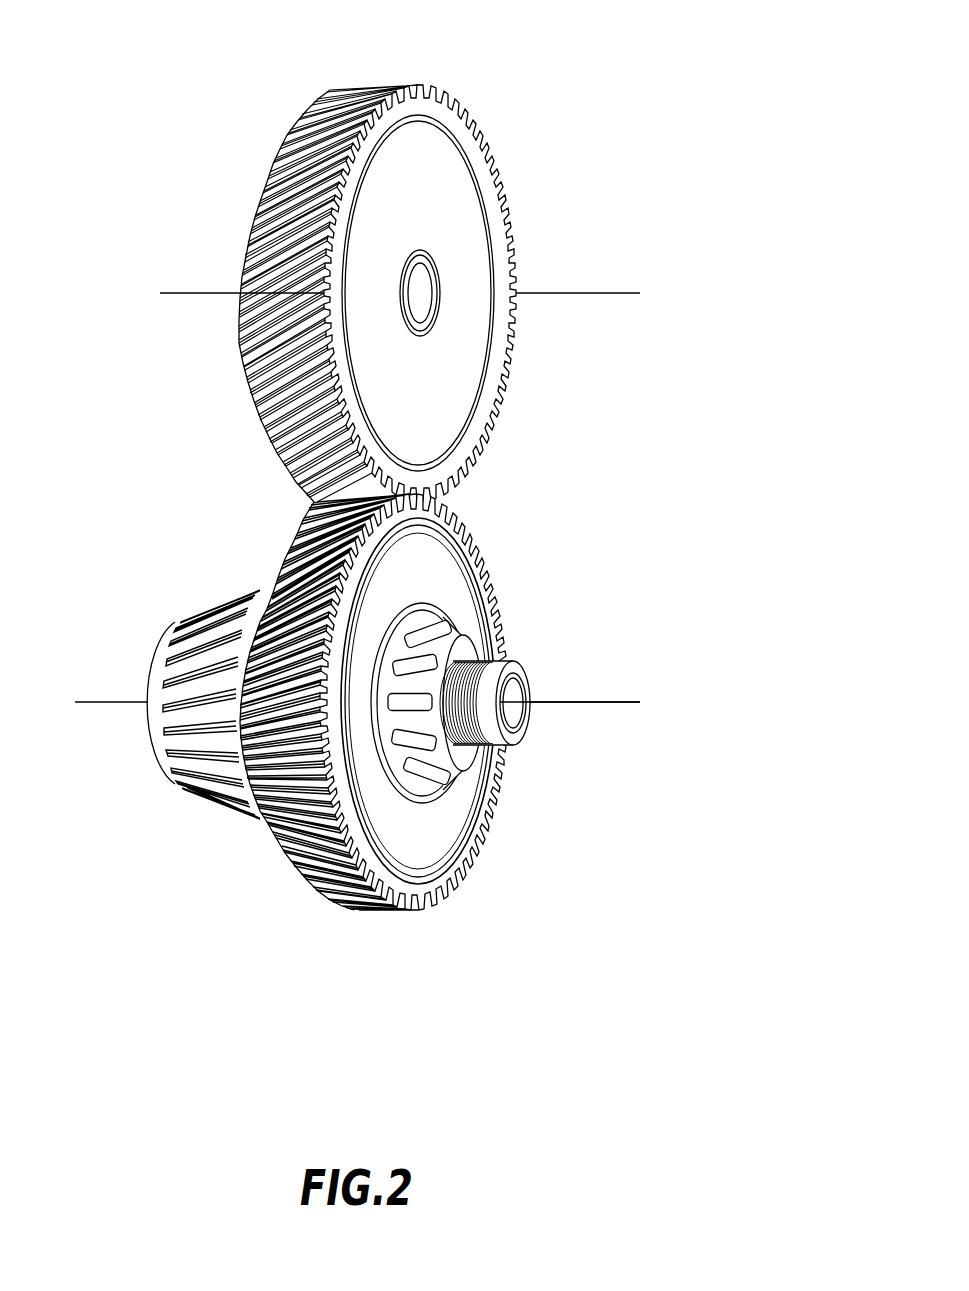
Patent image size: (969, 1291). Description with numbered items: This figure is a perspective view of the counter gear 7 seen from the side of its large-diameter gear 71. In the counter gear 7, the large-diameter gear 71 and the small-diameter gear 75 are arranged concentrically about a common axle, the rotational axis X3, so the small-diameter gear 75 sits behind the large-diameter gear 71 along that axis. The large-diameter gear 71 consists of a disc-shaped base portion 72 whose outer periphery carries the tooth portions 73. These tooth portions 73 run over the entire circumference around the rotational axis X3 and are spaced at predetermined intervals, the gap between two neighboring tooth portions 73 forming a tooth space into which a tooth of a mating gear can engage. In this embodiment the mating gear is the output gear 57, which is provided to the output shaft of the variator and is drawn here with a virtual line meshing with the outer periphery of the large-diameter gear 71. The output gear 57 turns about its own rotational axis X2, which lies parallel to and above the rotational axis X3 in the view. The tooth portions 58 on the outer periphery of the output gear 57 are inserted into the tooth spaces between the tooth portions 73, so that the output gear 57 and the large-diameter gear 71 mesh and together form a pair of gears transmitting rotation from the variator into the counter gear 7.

The counter gear 7 is at (393, 787).
The output gear 57 is at (431, 251).
The tooth portions 58 is at (506, 410).
The large-diameter gear 71 is at (440, 756).
The base portion 72 is at (449, 803).
The tooth portions 73 is at (490, 848).
The small-diameter gear 75 is at (243, 819).
The rotational axis X2 is at (416, 293).
The rotational axis X3 is at (373, 702).